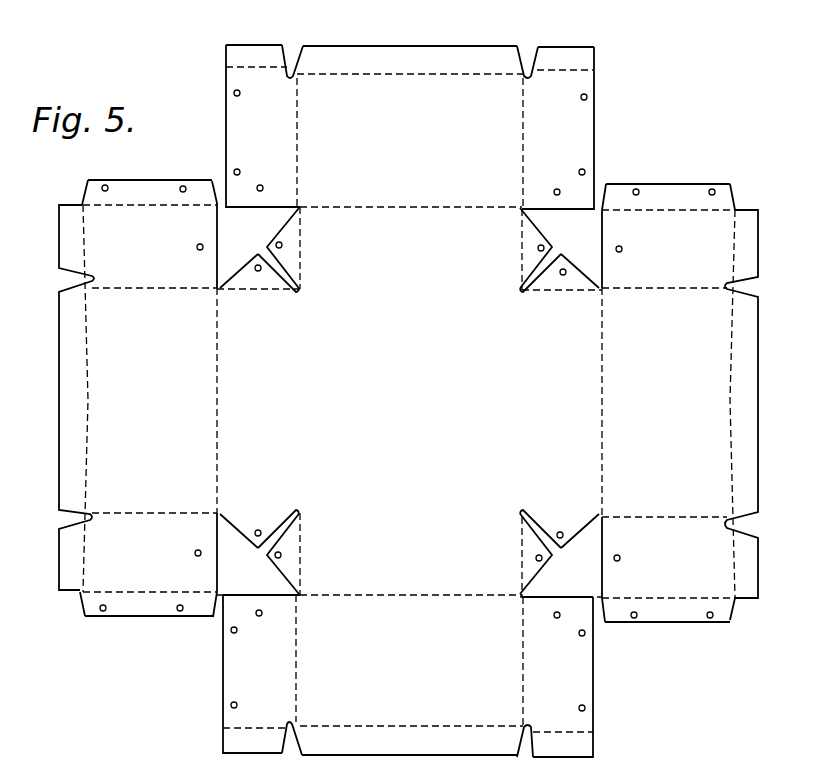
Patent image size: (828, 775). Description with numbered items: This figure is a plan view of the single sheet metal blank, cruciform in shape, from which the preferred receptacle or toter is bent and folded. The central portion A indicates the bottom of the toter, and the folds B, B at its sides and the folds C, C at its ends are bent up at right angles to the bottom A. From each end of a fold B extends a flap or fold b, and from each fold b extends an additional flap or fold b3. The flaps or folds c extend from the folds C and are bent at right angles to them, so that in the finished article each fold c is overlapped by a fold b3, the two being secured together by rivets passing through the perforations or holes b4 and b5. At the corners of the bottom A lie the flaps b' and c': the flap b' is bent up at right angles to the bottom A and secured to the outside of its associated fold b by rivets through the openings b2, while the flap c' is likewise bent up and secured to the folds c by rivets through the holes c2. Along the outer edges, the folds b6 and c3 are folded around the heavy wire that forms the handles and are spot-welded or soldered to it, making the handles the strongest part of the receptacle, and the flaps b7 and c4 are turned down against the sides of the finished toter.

The bottom A is at (409, 402).
The fold B is at (409, 401).
The flap or fold b is at (407, 401).
The flap b' is at (409, 401).
The openings b2 is at (622, 248).
The flap or fold b3 is at (669, 195).
The perforations or holes b4 is at (635, 188).
The perforations or holes b5 is at (588, 97).
The fold b6 is at (62, 393).
The flap b7 is at (141, 618).
The fold C is at (410, 401).
The flap or fold c is at (408, 401).
The flap c' is at (409, 402).
The holes c2 is at (557, 196).
The fold c3 is at (402, 58).
The flap c4 is at (258, 45).